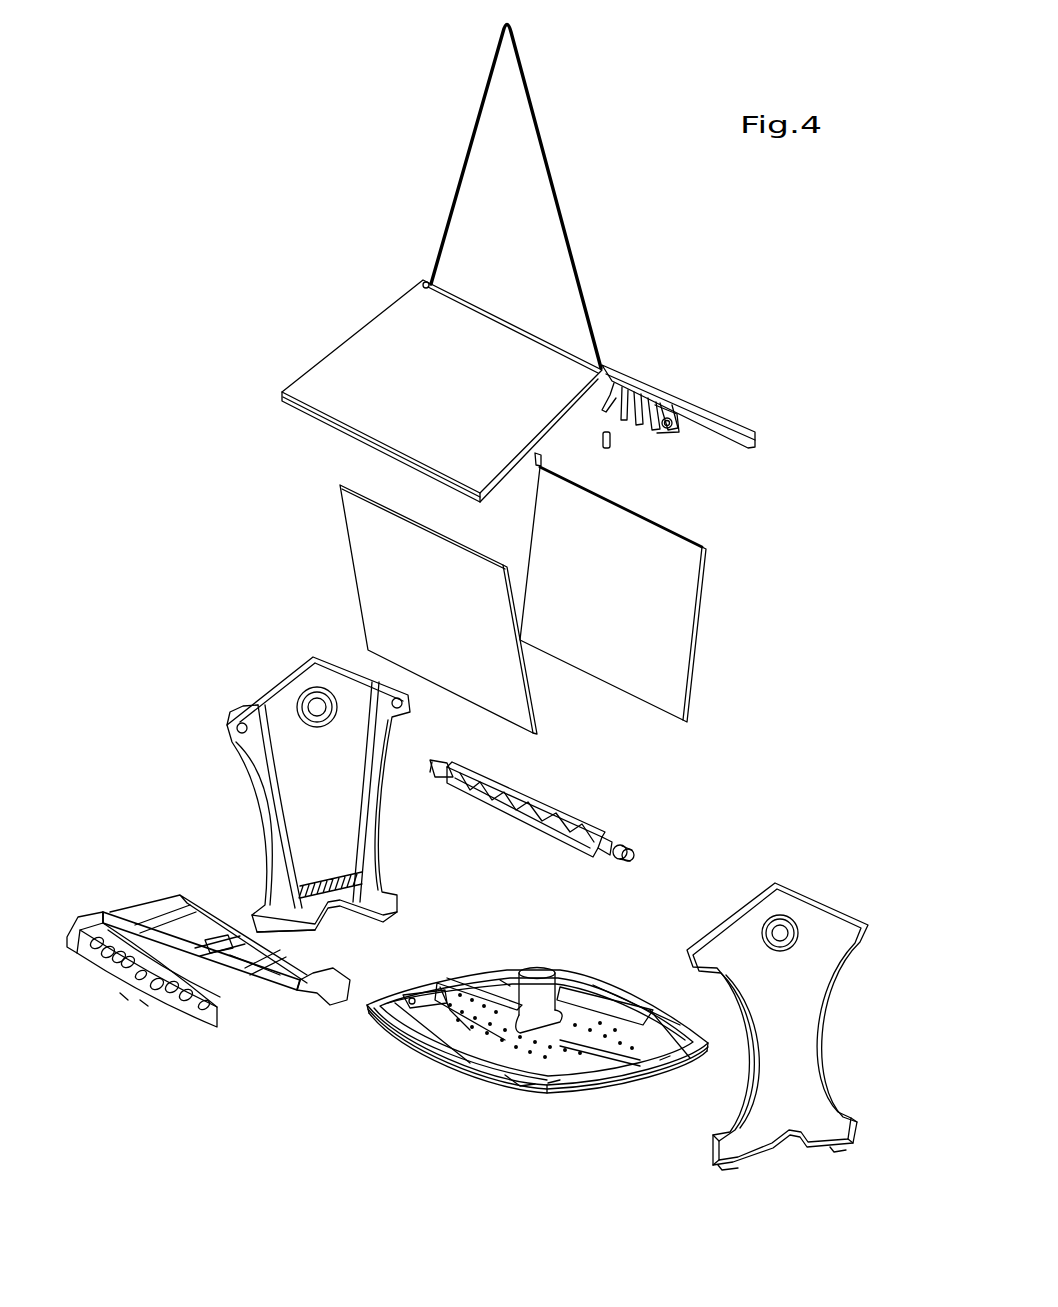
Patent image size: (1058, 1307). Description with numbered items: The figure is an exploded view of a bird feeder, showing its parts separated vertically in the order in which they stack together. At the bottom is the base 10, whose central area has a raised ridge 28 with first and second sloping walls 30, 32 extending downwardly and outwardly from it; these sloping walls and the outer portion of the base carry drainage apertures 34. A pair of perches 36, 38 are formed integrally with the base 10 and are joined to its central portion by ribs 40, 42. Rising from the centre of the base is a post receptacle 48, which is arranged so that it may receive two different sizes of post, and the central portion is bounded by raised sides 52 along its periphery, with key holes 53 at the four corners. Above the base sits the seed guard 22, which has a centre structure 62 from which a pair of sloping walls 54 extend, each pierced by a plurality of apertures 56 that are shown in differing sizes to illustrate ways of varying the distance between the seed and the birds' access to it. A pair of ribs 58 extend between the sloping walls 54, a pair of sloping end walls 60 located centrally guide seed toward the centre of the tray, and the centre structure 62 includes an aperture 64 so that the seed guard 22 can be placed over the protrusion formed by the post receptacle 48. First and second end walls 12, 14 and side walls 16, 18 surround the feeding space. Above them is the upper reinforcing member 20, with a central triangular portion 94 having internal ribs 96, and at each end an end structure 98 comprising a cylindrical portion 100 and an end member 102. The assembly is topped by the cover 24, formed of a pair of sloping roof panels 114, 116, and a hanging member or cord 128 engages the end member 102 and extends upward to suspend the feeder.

The base 10 is at (525, 1027).
The first end wall 12 is at (858, 1017).
The second end wall 14 is at (257, 843).
The side wall 16 is at (340, 578).
The side wall 18 is at (710, 630).
The upper reinforcing member 20 is at (586, 832).
The seed guard 22 is at (193, 933).
The cover 24 is at (495, 264).
The raised ridge 28 is at (450, 980).
The first sloping wall 30 is at (558, 1043).
The second sloping wall 32 is at (623, 1063).
The drainage apertures 34 is at (463, 1002).
The perch 36 is at (393, 1050).
The perch 38 is at (603, 988).
The rib 40 is at (513, 1088).
The rib 42 is at (633, 997).
The post receptacle 48 is at (545, 970).
The raised sides 52 is at (660, 1013).
The key holes 53 is at (505, 980).
The sloping walls 54 is at (170, 965).
The apertures 56 is at (112, 967).
The ribs 58 is at (188, 923).
The sloping end walls 60 is at (137, 908).
The centre structure 62 is at (212, 937).
The aperture 64 is at (258, 946).
The central triangular portion 94 is at (505, 787).
The internal ribs 96 is at (497, 812).
The end structure 98 is at (670, 864).
The cylindrical portion 100 is at (620, 840).
The end member 102 is at (622, 858).
The sloping roof panel 114 is at (481, 430).
The sloping roof panel 116 is at (643, 380).
The hanging member or cord 128 is at (565, 215).